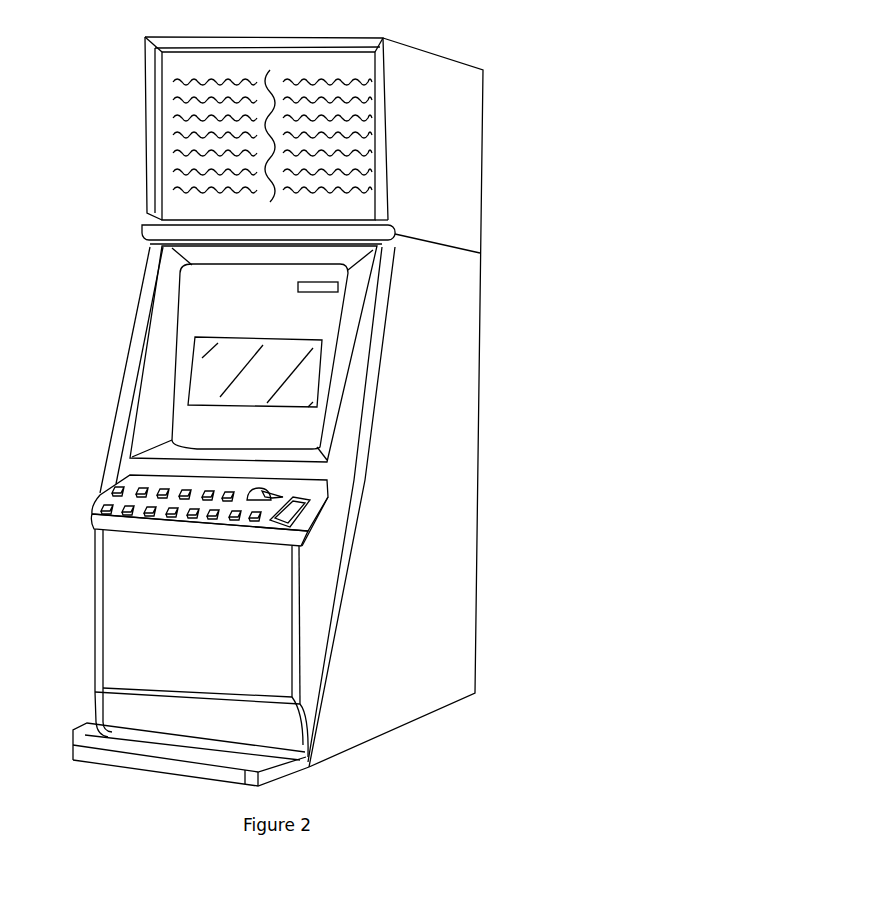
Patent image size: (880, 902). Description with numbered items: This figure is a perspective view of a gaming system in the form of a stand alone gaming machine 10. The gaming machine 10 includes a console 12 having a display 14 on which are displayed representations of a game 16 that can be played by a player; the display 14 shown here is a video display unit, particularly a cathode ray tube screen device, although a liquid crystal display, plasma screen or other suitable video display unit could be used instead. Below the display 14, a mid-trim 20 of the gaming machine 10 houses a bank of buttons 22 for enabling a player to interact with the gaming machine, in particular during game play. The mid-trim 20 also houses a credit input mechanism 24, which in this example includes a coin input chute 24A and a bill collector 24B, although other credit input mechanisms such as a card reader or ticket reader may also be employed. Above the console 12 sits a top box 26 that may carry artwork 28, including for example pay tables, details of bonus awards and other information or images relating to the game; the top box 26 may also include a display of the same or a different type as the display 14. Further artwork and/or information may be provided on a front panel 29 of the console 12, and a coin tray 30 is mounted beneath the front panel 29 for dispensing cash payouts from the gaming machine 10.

The gaming machine 10 is at (462, 49).
The console 12 is at (457, 383).
The display 14 is at (172, 417).
The game 16 is at (192, 375).
The mid-trim 20 is at (92, 508).
The bank of buttons 22 is at (152, 506).
The credit input mechanism 24 is at (288, 481).
The coin input chute 24A is at (272, 490).
The bill collector 24B is at (283, 518).
The top box 26 is at (148, 150).
The artwork 28 is at (185, 84).
The front panel 29 is at (118, 643).
The coin tray 30 is at (73, 759).